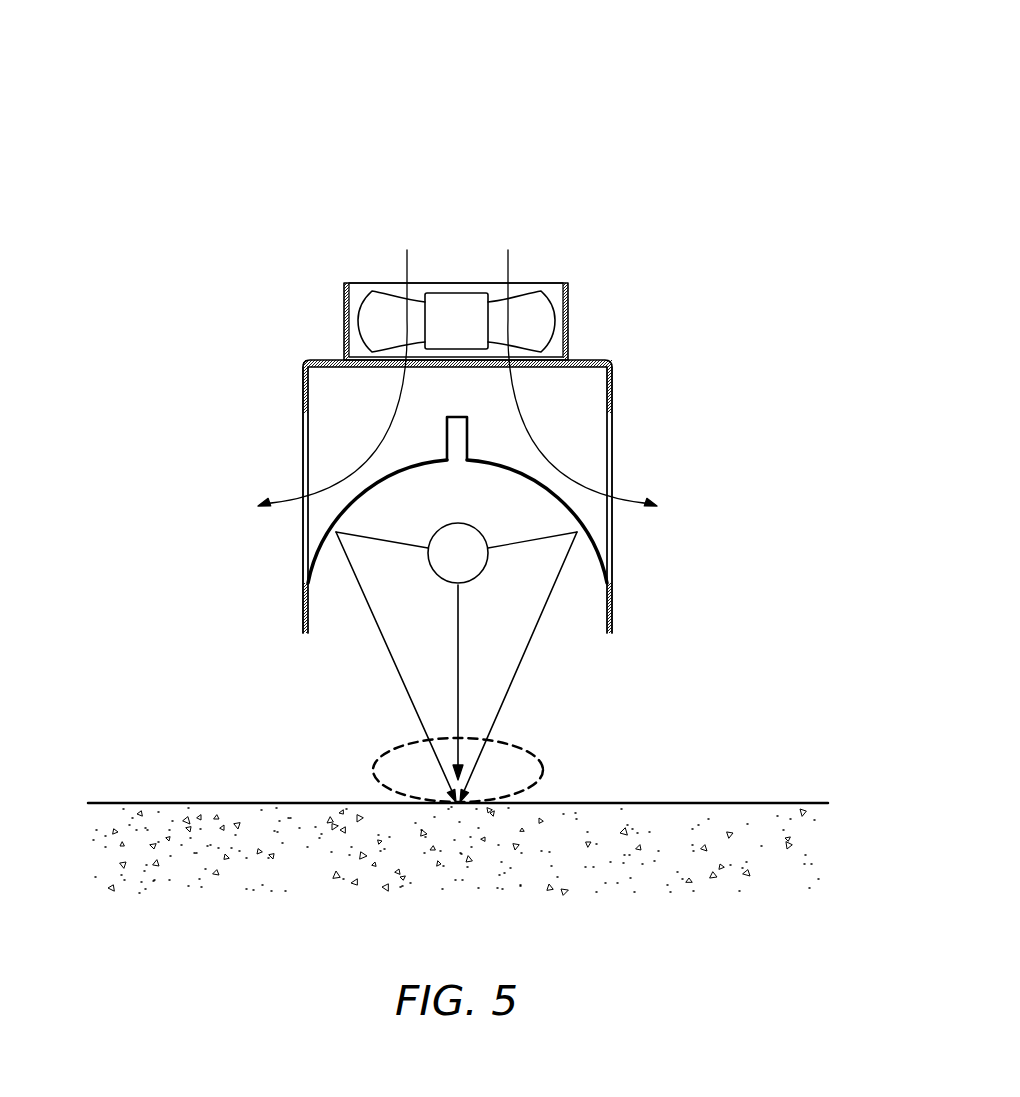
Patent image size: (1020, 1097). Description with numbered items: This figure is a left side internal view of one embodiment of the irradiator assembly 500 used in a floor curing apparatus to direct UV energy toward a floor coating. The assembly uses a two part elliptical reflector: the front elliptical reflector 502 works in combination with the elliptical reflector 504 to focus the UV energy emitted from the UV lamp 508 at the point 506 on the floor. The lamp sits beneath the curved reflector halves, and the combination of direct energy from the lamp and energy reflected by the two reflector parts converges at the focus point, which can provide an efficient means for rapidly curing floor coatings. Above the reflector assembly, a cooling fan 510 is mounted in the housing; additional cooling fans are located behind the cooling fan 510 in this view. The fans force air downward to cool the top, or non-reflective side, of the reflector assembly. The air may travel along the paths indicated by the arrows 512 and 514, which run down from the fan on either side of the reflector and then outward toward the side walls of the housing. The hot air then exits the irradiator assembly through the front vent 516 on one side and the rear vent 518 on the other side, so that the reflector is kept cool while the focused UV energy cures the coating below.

The irradiator assembly 500 is at (234, 126).
The front elliptical reflector 502 is at (358, 502).
The elliptical reflector 504 is at (557, 502).
The point 506 is at (373, 767).
The UV lamp 508 is at (475, 583).
The cooling fan 510 is at (459, 296).
The arrow 512 is at (344, 364).
The arrow 514 is at (573, 364).
The front vent 516 is at (303, 535).
The rear vent 518 is at (607, 535).